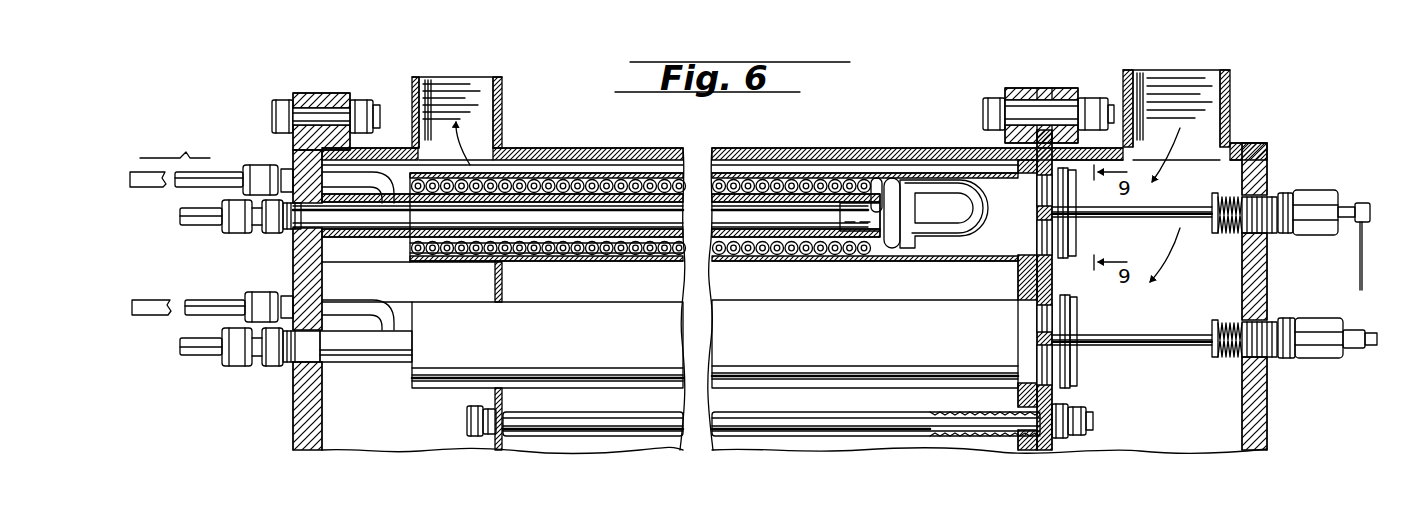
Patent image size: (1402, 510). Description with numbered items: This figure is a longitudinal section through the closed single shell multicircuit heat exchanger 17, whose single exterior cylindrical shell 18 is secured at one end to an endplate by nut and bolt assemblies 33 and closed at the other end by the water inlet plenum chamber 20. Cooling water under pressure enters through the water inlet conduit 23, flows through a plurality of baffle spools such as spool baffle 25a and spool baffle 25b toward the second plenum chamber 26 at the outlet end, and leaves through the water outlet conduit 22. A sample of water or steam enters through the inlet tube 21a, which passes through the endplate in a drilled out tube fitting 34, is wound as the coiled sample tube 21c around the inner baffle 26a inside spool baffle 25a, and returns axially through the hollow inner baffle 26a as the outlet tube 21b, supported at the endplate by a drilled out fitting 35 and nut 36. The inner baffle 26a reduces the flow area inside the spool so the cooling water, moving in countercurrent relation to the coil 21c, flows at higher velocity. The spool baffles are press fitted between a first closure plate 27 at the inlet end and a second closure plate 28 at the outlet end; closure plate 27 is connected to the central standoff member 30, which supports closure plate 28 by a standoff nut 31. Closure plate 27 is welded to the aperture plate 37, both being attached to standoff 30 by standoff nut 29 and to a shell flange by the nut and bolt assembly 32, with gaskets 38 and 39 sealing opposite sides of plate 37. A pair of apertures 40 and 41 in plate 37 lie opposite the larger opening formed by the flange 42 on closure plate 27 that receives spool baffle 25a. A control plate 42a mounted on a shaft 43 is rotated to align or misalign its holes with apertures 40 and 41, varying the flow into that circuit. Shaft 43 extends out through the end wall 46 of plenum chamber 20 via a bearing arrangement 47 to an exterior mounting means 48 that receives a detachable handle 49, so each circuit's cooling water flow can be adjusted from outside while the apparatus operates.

The heat exchanger 17 is at (583, 143).
The cylindrical shell 18 is at (611, 147).
The water inlet plenum chamber 20 is at (1171, 309).
The inlet tube 21a is at (218, 177).
The outlet tube 21b is at (188, 226).
The coiled sample tube 21c is at (896, 178).
The water outlet conduit 22 is at (498, 100).
The water inlet conduit 23 is at (1232, 92).
The spool baffle 25a is at (823, 172).
The spool baffle 25b is at (589, 356).
The second plenum chamber 26 is at (424, 286).
The inner baffle 26a is at (535, 258).
The first closure plate 27 is at (1020, 280).
The second closure plate 28 is at (496, 276).
The standoff nut 29 is at (1070, 440).
The central standoff member 30 is at (848, 437).
The standoff nut 31 is at (485, 440).
The nut and bolt assembly 32 is at (1018, 104).
The nut and bolt assembly 33 is at (301, 112).
The drilled out tube fitting 34 is at (283, 176).
The drilled out fitting 35 is at (273, 234).
The nut 36 is at (233, 233).
The aperture plate 37 is at (1068, 287).
The gasket 38 is at (1065, 100).
The gasket 39 is at (1040, 88).
The aperture 40 is at (1042, 189).
The aperture 41 is at (1042, 232).
The flange 42 is at (1025, 160).
The control plate 42a is at (1062, 236).
The shaft 43 is at (1186, 207).
The end wall 46 is at (1262, 291).
The bearing arrangement 47 is at (1238, 200).
The exterior mounting means 48 is at (1310, 236).
The detachable handle 49 is at (1362, 267).